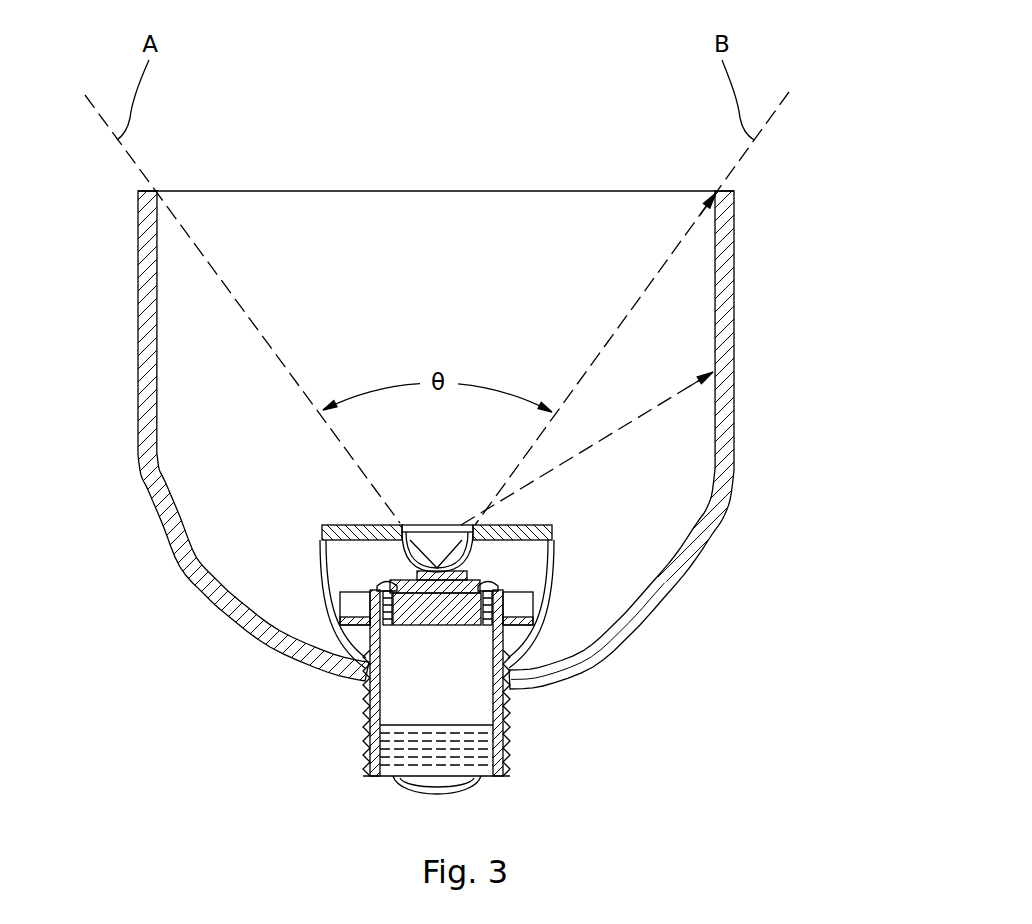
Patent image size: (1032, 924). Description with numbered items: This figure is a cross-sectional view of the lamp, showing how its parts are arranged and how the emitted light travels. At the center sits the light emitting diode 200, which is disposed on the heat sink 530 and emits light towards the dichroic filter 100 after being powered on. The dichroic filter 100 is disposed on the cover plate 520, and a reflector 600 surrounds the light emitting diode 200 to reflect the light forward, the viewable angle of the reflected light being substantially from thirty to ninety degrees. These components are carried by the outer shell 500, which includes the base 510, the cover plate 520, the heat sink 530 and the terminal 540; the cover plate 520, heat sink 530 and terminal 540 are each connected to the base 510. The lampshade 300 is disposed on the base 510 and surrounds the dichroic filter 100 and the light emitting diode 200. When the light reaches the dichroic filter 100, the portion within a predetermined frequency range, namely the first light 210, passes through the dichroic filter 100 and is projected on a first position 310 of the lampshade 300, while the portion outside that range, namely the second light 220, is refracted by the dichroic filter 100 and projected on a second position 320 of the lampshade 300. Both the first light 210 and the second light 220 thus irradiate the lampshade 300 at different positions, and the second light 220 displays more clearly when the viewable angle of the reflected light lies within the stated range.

The dichroic filter 100 is at (421, 524).
The light emitting diode 200 is at (395, 582).
The first light 210 is at (632, 308).
The second light 220 is at (636, 422).
The lampshade 300 is at (736, 270).
The first position 310 is at (717, 192).
The second position 320 is at (735, 375).
The outer shell 500 is at (827, 478).
The base 510 is at (553, 563).
The cover plate 520 is at (551, 525).
The heat sink 530 is at (503, 616).
The terminal 540 is at (512, 726).
The reflector 600 is at (400, 548).